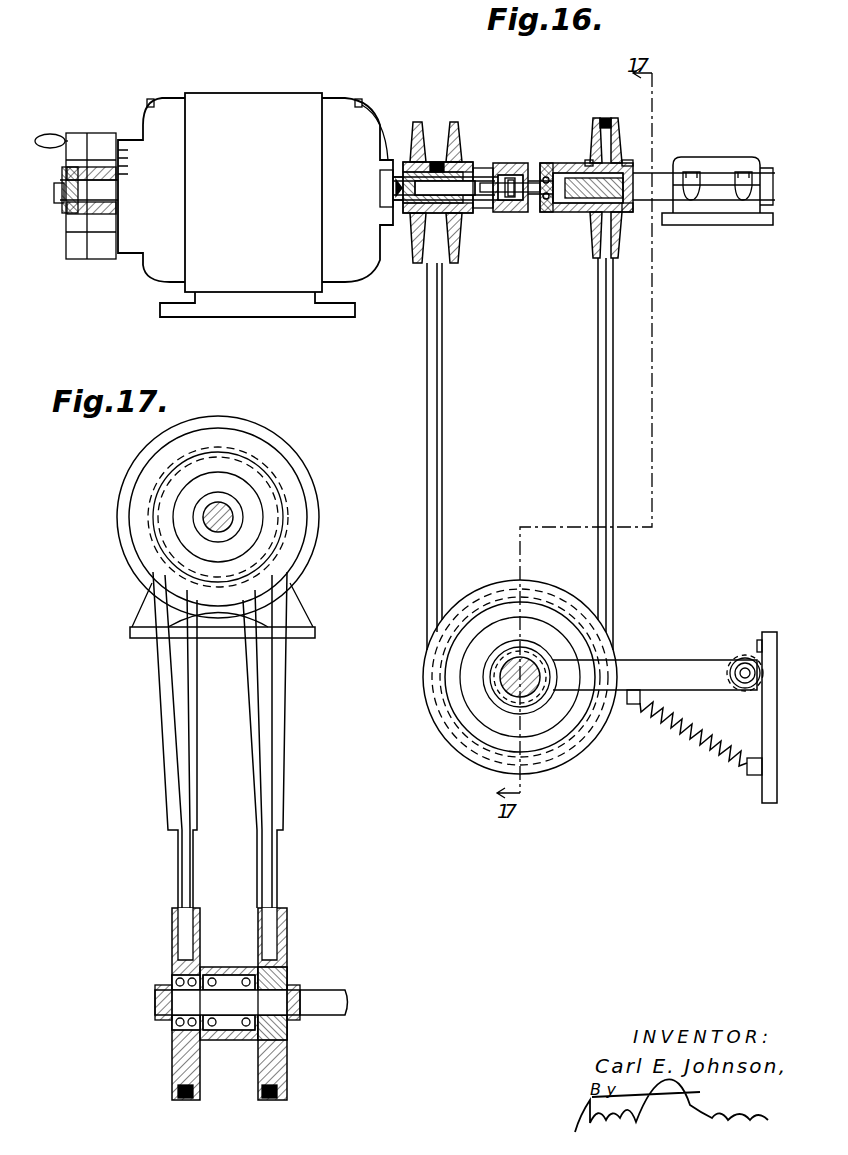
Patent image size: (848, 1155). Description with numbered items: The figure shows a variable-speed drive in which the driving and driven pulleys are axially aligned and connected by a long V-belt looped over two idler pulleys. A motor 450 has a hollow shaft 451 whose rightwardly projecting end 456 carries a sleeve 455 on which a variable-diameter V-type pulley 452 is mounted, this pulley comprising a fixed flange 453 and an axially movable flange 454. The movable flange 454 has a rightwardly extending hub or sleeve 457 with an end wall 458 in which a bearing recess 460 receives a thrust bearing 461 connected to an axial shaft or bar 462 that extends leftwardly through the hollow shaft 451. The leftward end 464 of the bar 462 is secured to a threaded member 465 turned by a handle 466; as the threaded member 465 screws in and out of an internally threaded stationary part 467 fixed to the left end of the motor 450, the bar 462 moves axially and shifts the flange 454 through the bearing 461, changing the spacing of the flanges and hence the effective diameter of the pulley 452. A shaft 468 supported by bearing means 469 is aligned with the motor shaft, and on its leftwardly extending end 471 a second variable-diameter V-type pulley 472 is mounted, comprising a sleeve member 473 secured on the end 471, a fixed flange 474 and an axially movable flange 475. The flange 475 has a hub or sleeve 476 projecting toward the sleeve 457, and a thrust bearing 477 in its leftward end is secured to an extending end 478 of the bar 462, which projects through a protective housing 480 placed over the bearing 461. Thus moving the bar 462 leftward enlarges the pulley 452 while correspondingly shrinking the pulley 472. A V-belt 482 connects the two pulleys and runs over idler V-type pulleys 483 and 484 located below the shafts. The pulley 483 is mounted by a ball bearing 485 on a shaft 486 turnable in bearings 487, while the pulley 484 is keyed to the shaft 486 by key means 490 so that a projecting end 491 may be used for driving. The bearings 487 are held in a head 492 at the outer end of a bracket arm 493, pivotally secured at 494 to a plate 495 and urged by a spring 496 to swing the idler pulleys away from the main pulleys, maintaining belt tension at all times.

In FIG. 16, the motor 450 is at (268, 100).
In FIG. 16, the hollow shaft 451 is at (392, 206).
In FIG. 16, the variable-diameter V-type pulley 452 is at (437, 128).
In FIG. 16, the fixed flange 453 is at (414, 120).
In FIG. 16, the axially movable flange 454 is at (458, 130).
In FIG. 16, the sleeve 455 is at (412, 222).
In FIG. 16, the rightwardly projecting end 456 is at (383, 128).
In FIG. 16, the hub or sleeve 457 is at (462, 166).
In FIG. 16, the end wall 458 is at (483, 208).
In FIG. 16, the bearing recess 460 is at (505, 172).
In FIG. 16, the thrust bearing 461 is at (517, 212).
In FIG. 16, the axial shaft (bar) 462 is at (468, 195).
In FIG. 16, the leftward end 464 is at (98, 198).
In FIG. 16, the threaded member 465 is at (70, 210).
In FIG. 16, the handle 466 is at (52, 136).
In FIG. 16, the internally threaded stationary part 467 is at (82, 183).
In FIG. 16, the shaft 468 is at (665, 185).
In FIG. 16, the bearing means 469 is at (727, 165).
In FIG. 16, the leftwardly extending end 471 is at (577, 192).
In FIG. 16, the variable-diameter V-type pulley 472 is at (612, 125).
In FIG. 16, the sleeve member 473 is at (628, 210).
In FIG. 16, the fixed flange 474 is at (613, 158).
In FIG. 16, the axially movable flange 475 is at (593, 165).
In FIG. 16, the hub or sleeve 476 is at (580, 163).
In FIG. 16, the thrust bearing 477 is at (546, 202).
In FIG. 16, the extending end 478 is at (537, 204).
In FIG. 16, the protective shaft or housing 480 is at (522, 176).
In FIG. 16, the V-belt 482 is at (437, 470).
In FIG. 17, the V-belt 482 is at (276, 732).
In FIG. 17, the idler V-type pulley 483 is at (178, 942).
In FIG. 17, the idler V-type pulley 484 is at (281, 926).
In FIG. 17, the ball bearing 485 is at (174, 982).
In FIG. 17, the shaft 486 is at (240, 1003).
In FIG. 17, the bearings 487 is at (247, 1042).
In FIG. 17, the key means 490 is at (282, 968).
In FIG. 17, the projecting end 491 is at (322, 1005).
In FIG. 16, the head 492 is at (497, 695).
In FIG. 17, the head 492 is at (226, 966).
In FIG. 16, the bracket arm 493 is at (660, 660).
In FIG. 16, the pivot 494 is at (745, 666).
In FIG. 16, the plate 495 is at (770, 770).
In FIG. 16, the spring 496 is at (698, 748).